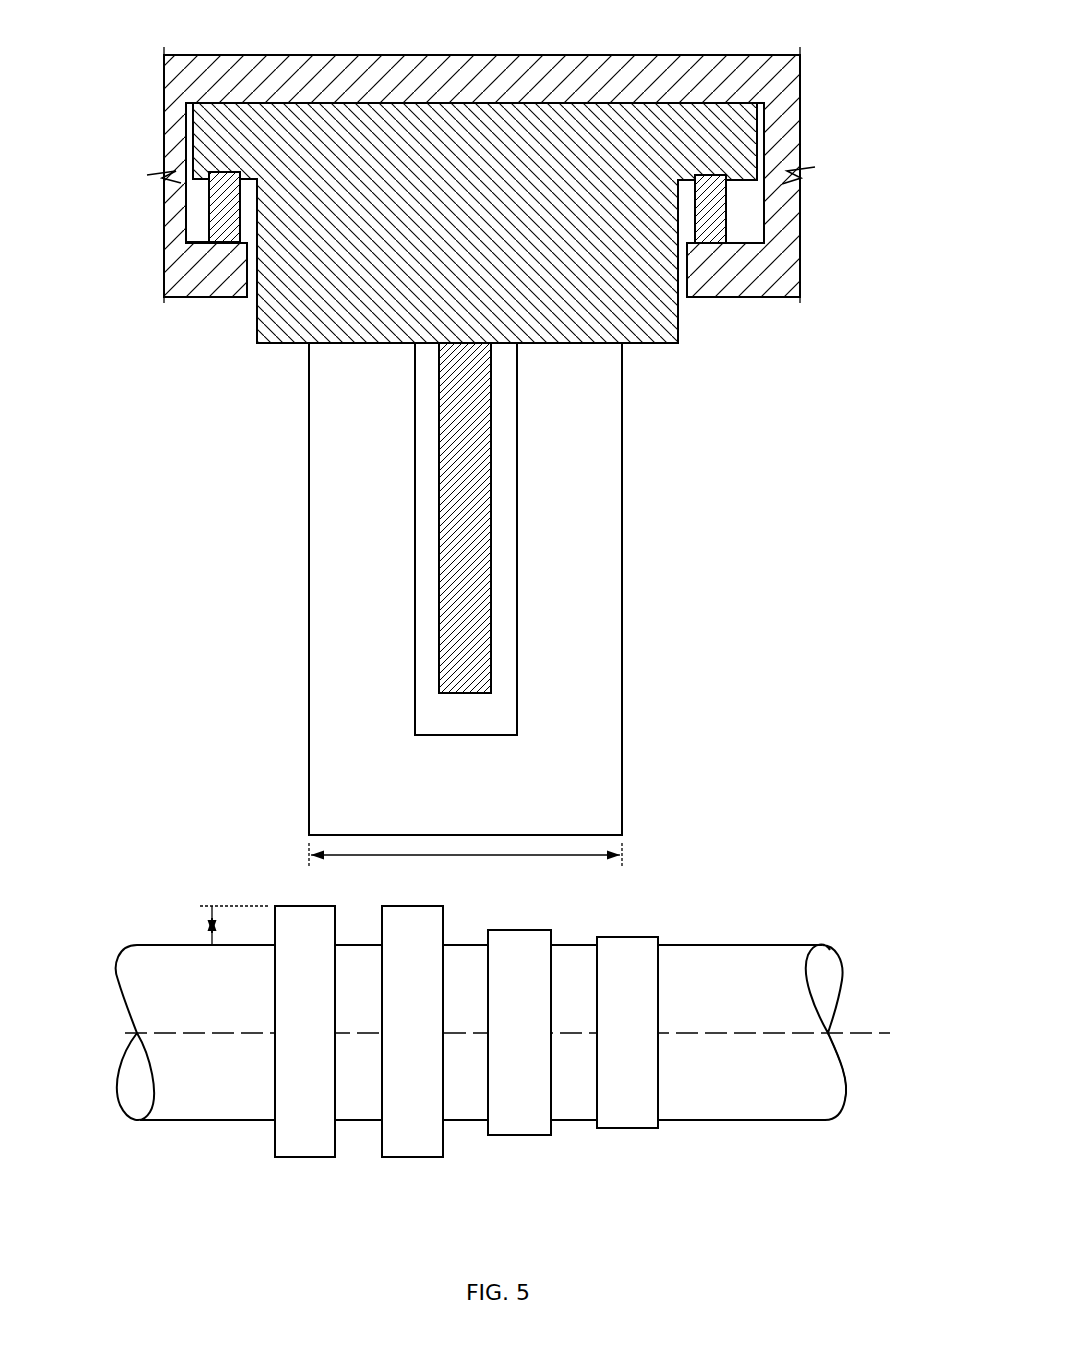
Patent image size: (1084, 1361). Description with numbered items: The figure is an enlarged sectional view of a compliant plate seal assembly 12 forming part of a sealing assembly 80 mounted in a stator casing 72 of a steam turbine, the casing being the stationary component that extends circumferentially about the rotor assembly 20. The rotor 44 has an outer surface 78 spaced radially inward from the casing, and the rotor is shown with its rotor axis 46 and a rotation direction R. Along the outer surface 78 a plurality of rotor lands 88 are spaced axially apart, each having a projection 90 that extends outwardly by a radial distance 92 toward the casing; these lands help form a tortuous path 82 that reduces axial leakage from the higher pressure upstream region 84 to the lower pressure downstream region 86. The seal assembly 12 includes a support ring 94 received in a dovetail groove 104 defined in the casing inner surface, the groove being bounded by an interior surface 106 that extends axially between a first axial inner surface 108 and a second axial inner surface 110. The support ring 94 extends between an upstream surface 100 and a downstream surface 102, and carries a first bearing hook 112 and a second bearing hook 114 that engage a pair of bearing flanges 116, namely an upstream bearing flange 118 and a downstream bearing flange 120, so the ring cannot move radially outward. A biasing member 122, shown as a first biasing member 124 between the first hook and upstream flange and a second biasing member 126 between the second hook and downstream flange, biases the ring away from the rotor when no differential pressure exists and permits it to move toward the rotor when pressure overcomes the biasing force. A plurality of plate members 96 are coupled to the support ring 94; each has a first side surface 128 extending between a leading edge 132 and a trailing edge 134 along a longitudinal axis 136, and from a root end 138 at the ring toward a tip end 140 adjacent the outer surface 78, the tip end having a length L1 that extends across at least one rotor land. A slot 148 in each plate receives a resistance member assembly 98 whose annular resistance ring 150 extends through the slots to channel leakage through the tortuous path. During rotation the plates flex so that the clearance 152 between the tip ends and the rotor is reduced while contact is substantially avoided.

The compliant plate seal assembly 12 is at (515, 594).
The rotor assembly 20 is at (501, 1043).
The rotor 44 is at (481, 1008).
The rotor axis 46 is at (875, 1030).
The stator casing 72 is at (766, 54).
The outer surface 78 is at (716, 942).
The sealing assembly 80 is at (512, 234).
The tortuous path 82 is at (340, 876).
The upstream region 84 is at (249, 784).
The downstream region 86 is at (714, 784).
The rotor lands 88 is at (412, 906).
The projection 90 is at (337, 914).
The radial distance 92 is at (210, 923).
The support ring 94 is at (486, 268).
The plate members 96 is at (600, 447).
The resistance member assembly 98 is at (492, 598).
The upstream surface 100 is at (254, 334).
The downstream surface 102 is at (682, 340).
The dovetail groove 104 is at (762, 211).
The interior surface 106 is at (767, 117).
The first axial inner surface 108 is at (190, 195).
The second axial inner surface 110 is at (762, 195).
The first bearing hook 112 is at (201, 298).
The second bearing hook 114 is at (752, 300).
The bearing flanges 116 is at (193, 124).
The upstream bearing flange 118 is at (283, 139).
The downstream bearing flange 120 is at (680, 139).
The biasing member 122 is at (816, 215).
The first biasing member 124 is at (208, 226).
The second biasing member 126 is at (727, 234).
The first side surface 128 is at (314, 811).
The leading edge 132 is at (309, 628).
The trailing edge 134 is at (623, 636).
The longitudinal axis 136 is at (862, 1028).
The root end 138 is at (600, 379).
The tip end 140 is at (607, 833).
The slot 148 is at (517, 718).
The annular resistance ring 150 is at (492, 545).
The clearance 152 is at (645, 875).
The length L1 is at (491, 855).
The rotation direction R is at (100, 1052).